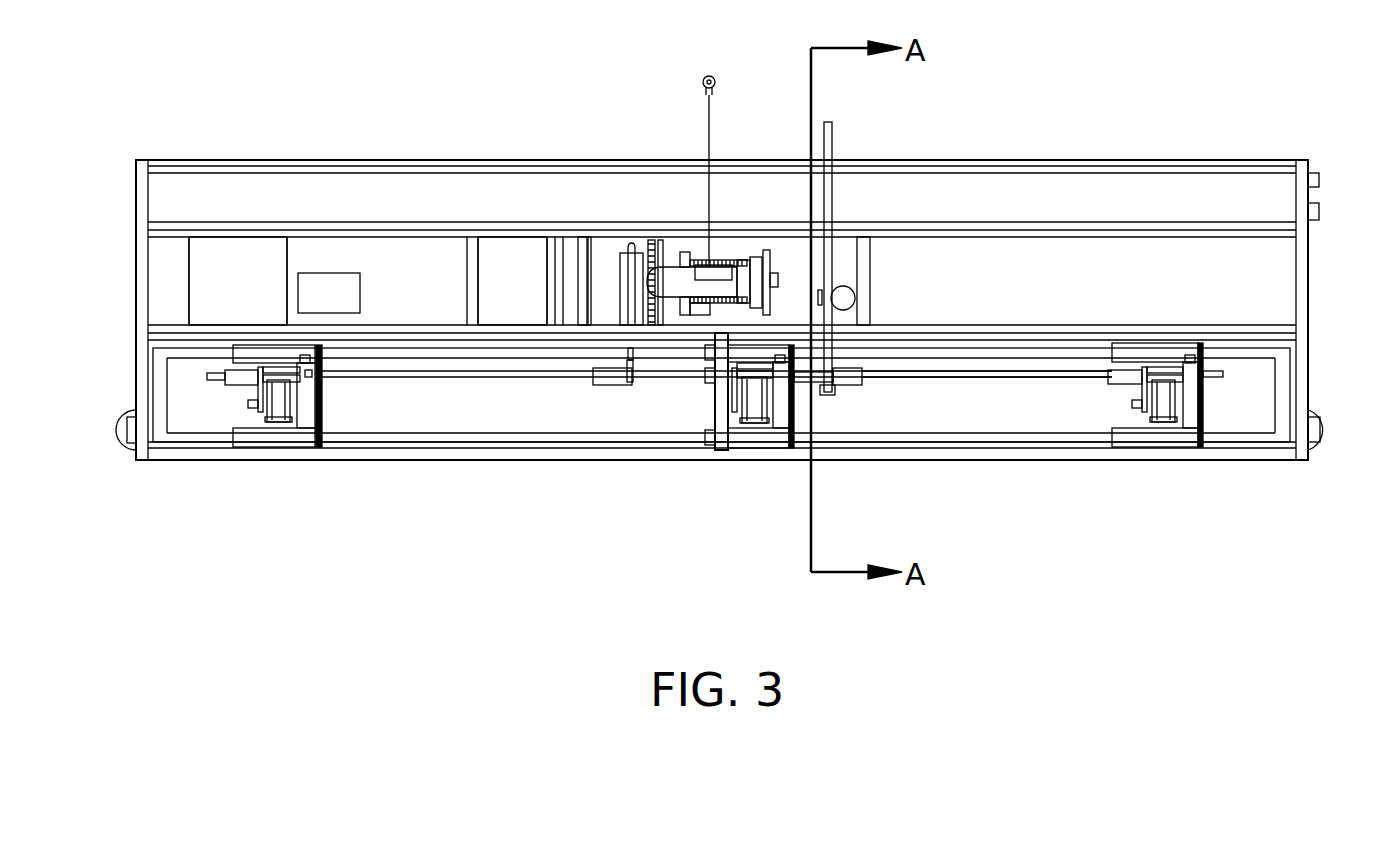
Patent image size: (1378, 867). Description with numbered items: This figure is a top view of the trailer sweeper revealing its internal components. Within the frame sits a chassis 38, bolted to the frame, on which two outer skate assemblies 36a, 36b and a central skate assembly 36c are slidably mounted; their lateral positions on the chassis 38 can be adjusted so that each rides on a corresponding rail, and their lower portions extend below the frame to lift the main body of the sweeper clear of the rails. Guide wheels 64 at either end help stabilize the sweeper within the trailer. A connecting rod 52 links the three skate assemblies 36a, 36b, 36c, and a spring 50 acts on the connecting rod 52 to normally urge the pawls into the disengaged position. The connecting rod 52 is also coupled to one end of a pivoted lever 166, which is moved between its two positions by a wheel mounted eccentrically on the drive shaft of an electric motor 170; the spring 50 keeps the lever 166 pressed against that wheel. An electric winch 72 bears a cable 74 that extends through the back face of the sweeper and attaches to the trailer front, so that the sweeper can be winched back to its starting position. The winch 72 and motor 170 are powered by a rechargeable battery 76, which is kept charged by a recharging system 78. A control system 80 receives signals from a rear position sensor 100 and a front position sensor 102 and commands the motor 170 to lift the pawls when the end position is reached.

The chassis 38 is at (1283, 380).
The control system 80 is at (250, 265).
The recharging system 78 is at (327, 280).
The rechargeable battery 76 is at (510, 263).
The spring 50 is at (628, 280).
The cable 74 is at (712, 117).
The pivoted lever 166 is at (834, 190).
The electric motor 170 is at (848, 293).
The front position sensor 102 is at (1322, 182).
The rear position sensor 100 is at (1322, 208).
The guide wheels 64 is at (120, 453).
The outer skate assembly 36a is at (320, 407).
The central skate assembly 36c is at (717, 402).
The electric winch 72 is at (707, 308).
The connecting rod 52 is at (1040, 377).
The outer skate assembly 36b is at (1207, 403).